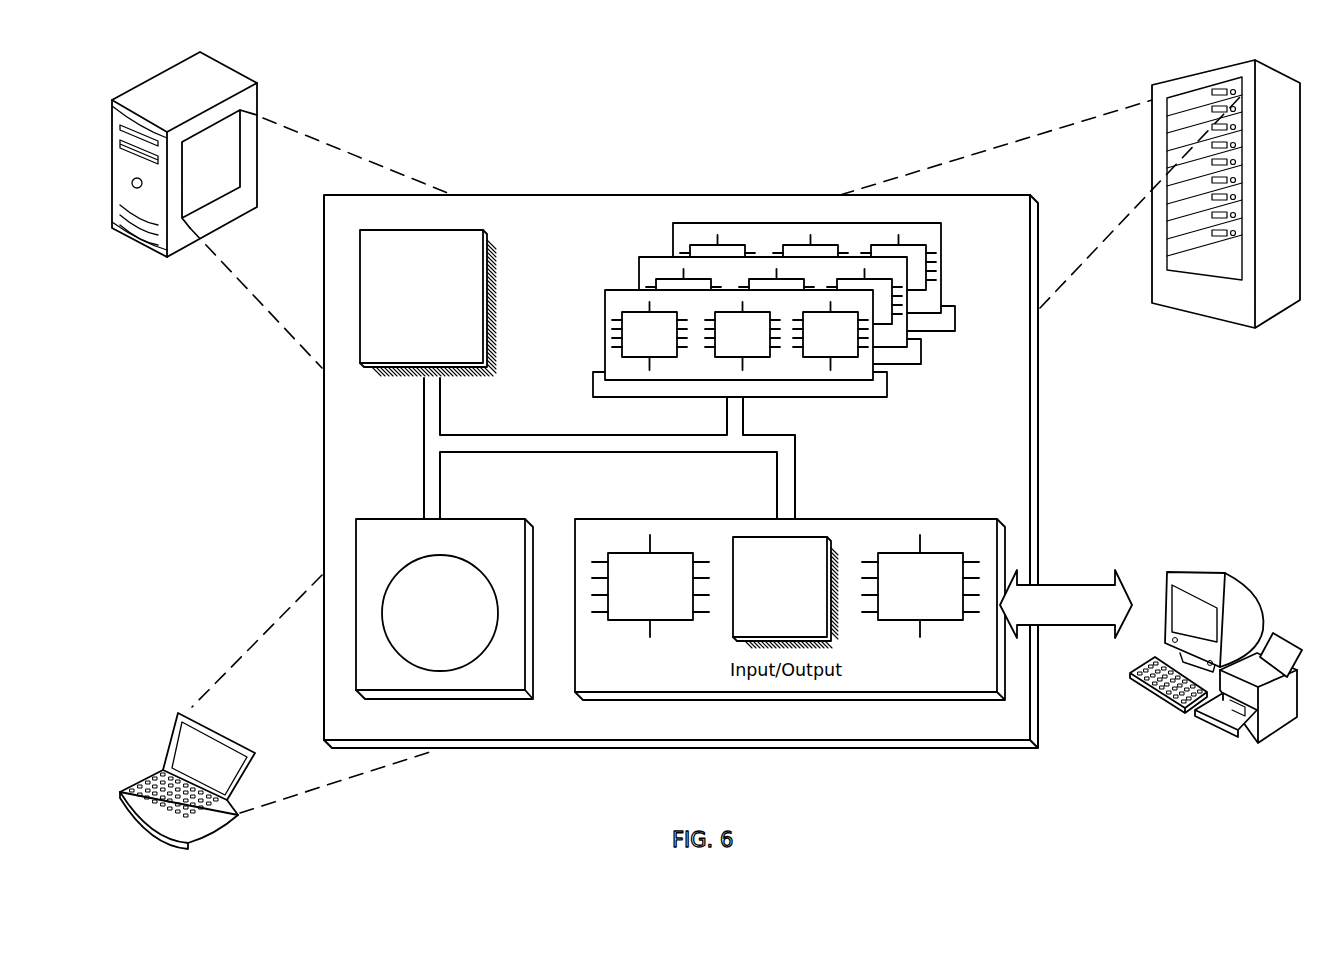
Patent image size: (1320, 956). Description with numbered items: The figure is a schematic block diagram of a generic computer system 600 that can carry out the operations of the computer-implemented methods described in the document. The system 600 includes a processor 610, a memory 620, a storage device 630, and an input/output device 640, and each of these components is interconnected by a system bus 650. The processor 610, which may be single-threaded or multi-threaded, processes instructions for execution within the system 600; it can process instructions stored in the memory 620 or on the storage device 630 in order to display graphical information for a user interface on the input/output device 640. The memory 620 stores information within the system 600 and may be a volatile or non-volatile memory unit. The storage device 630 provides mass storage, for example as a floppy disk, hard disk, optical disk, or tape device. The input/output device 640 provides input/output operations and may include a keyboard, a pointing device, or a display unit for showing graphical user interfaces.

The computer system 600 is at (508, 72).
The processor 610 is at (473, 355).
The memory 620 is at (946, 360).
The storage device 630 is at (515, 680).
The input/output device 640 is at (1163, 575).
The system bus 650 is at (607, 452).